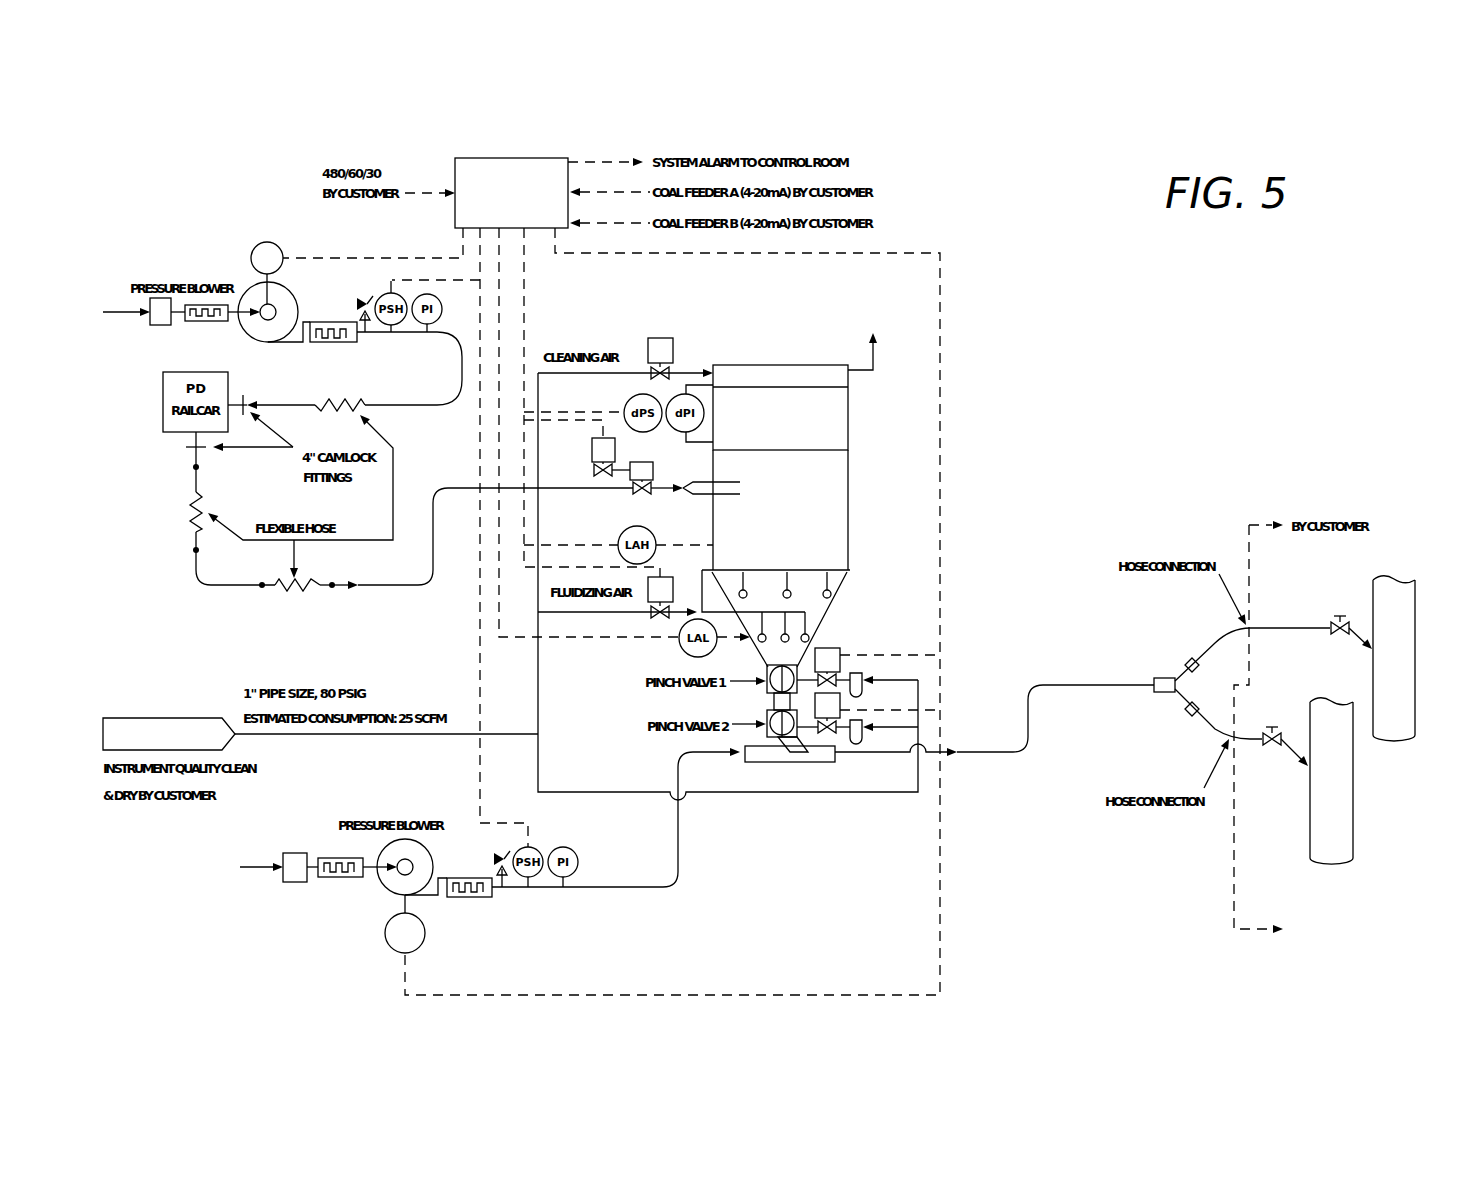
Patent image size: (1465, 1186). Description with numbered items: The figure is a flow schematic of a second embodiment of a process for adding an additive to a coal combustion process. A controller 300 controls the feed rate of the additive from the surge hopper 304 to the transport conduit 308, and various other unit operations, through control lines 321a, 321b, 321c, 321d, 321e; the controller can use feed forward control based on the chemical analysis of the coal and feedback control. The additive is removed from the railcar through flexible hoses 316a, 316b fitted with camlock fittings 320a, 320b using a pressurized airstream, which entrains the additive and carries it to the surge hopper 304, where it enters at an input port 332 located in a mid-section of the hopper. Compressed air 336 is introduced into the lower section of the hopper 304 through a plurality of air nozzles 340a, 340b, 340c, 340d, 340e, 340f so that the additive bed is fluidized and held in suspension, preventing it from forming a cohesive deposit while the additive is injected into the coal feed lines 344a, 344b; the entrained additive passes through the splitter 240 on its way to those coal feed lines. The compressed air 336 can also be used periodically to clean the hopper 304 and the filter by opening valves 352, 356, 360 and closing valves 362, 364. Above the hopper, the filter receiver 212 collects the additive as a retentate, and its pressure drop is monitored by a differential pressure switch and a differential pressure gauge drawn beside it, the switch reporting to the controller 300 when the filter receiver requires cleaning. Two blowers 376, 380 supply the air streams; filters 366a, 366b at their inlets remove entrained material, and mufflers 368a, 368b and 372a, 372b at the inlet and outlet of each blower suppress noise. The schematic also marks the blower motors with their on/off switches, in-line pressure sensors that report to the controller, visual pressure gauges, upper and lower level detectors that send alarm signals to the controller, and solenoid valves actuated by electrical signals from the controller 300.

The controller 300 is at (462, 158).
The control line 321a is at (434, 255).
The control line 321b is at (400, 278).
The control line 321c is at (499, 303).
The control line 321d is at (524, 268).
The control line 321e is at (940, 253).
The filter 366a is at (146, 306).
The muffler 368a is at (192, 323).
The muffler 368b is at (320, 317).
The blower 376 is at (250, 290).
The flexible hose 316a is at (355, 398).
The flexible hose 316b is at (187, 510).
The camlock fitting 320a is at (245, 393).
The camlock fitting 320b is at (187, 446).
The valve 352 is at (673, 366).
The valve 362 is at (633, 488).
The input port 332 is at (700, 495).
The valve 364 is at (655, 620).
The filter receiver 212 is at (848, 430).
The surge hopper 304 is at (848, 480).
The air nozzle 340a is at (747, 592).
The air nozzle 340b is at (791, 592).
The air nozzle 340c is at (831, 592).
The air nozzle 340d is at (805, 614).
The air nozzle 340e is at (789, 635).
The air nozzle 340f is at (809, 640).
The valve 356 is at (840, 663).
The valve 360 is at (840, 708).
The transport conduit 308 is at (997, 752).
The compressed air 336 is at (160, 718).
The filter 366b is at (290, 882).
The muffler 372a is at (337, 877).
The muffler 372b is at (480, 897).
The blower 380 is at (385, 888).
The splitter 240 is at (1165, 680).
The coal feed line 344a is at (1409, 574).
The coal feed line 344b is at (1340, 863).